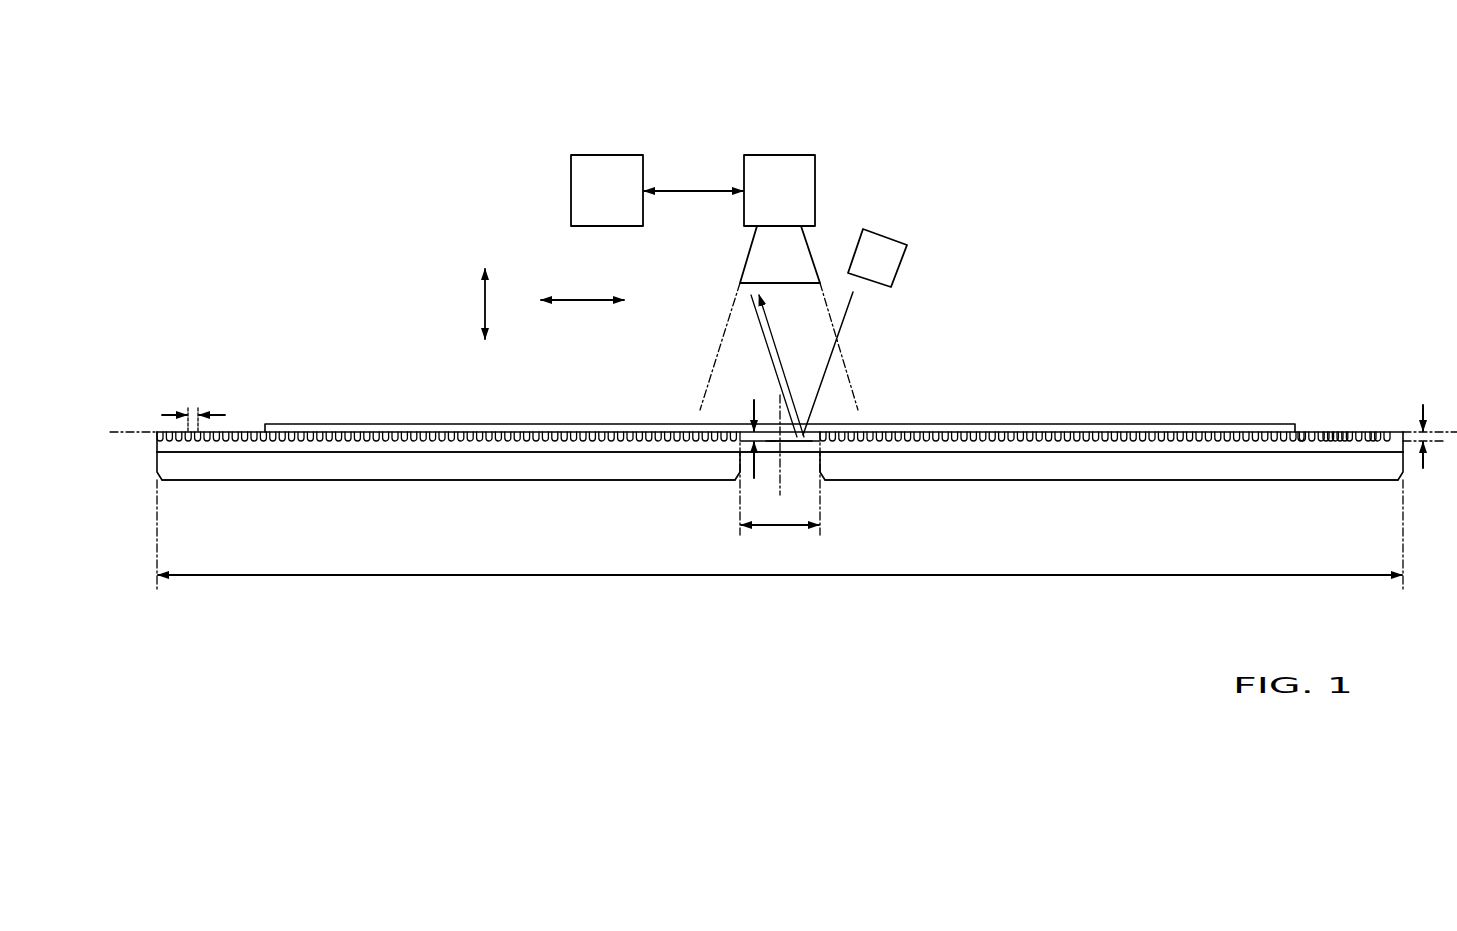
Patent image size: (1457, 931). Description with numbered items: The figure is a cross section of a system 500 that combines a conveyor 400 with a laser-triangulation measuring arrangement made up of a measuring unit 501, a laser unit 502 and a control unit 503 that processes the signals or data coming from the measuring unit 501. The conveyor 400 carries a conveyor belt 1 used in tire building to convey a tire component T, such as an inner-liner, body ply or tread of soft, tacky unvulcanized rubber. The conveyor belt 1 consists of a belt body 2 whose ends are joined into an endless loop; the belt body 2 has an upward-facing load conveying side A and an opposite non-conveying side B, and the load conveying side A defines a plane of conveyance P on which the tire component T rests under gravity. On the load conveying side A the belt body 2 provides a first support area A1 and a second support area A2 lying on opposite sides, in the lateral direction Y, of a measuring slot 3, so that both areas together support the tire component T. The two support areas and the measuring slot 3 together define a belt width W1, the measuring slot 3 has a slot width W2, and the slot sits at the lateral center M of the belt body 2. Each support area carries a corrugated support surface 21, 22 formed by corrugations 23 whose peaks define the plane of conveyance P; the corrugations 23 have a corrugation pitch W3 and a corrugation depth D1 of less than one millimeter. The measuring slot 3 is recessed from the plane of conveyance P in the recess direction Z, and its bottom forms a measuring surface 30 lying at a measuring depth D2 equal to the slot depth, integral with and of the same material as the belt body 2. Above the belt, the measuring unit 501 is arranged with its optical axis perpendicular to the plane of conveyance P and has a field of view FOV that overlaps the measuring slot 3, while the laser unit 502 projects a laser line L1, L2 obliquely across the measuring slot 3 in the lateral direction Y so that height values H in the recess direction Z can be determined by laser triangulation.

The conveyor belt 1 is at (140, 492).
The belt body 2 is at (222, 446).
The measuring slot 3 is at (803, 475).
The corrugated support surface 21 is at (238, 432).
The corrugated support surface 22 is at (1304, 432).
The corrugations 23 is at (1351, 432).
The measuring surface 30 is at (790, 443).
The conveyor 400 is at (353, 220).
The system 500 is at (710, 112).
The measuring unit 501 is at (808, 181).
The laser unit 502 is at (888, 254).
The control unit 503 is at (576, 188).
The tire component T is at (1022, 424).
The plane of conveyance P is at (772, 432).
The load conveying side A is at (1373, 432).
The first support area A1 is at (448, 502).
The second support area A2 is at (1111, 503).
The non-conveying side B is at (600, 452).
The center M is at (768, 443).
The height values H is at (693, 171).
The field of view FOV is at (712, 346).
The laser line L1 is at (848, 322).
The laser line L2 is at (823, 360).
The belt width W1 is at (780, 542).
The slot width W2 is at (780, 540).
The corrugation pitch W3 is at (187, 410).
The corrugation depth D1 is at (1423, 416).
The measuring depth D2 is at (736, 436).
The recess direction Z is at (471, 304).
The lateral direction Y is at (582, 281).